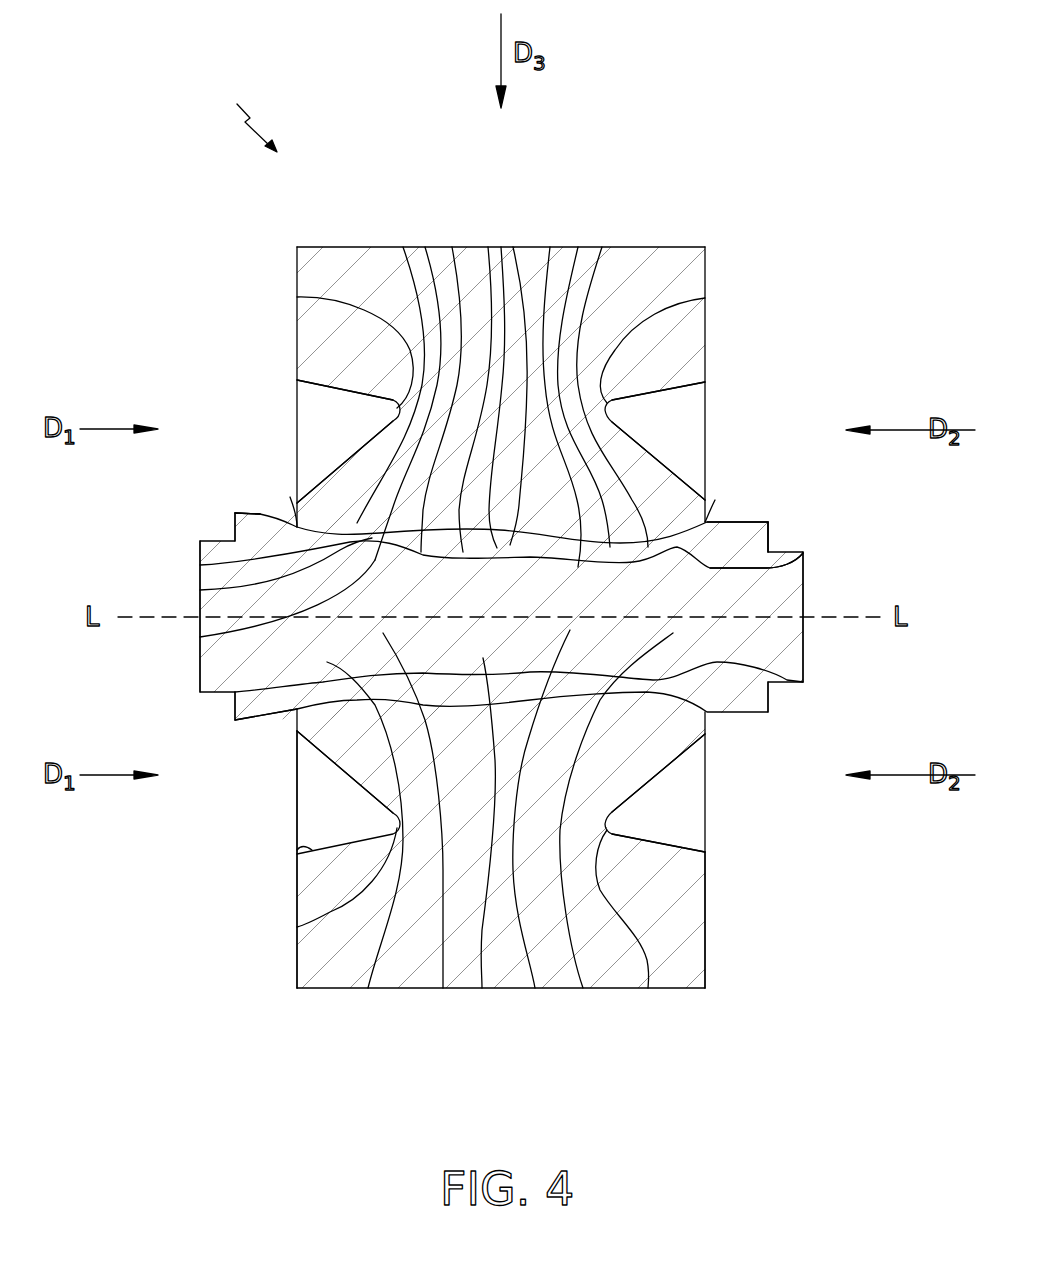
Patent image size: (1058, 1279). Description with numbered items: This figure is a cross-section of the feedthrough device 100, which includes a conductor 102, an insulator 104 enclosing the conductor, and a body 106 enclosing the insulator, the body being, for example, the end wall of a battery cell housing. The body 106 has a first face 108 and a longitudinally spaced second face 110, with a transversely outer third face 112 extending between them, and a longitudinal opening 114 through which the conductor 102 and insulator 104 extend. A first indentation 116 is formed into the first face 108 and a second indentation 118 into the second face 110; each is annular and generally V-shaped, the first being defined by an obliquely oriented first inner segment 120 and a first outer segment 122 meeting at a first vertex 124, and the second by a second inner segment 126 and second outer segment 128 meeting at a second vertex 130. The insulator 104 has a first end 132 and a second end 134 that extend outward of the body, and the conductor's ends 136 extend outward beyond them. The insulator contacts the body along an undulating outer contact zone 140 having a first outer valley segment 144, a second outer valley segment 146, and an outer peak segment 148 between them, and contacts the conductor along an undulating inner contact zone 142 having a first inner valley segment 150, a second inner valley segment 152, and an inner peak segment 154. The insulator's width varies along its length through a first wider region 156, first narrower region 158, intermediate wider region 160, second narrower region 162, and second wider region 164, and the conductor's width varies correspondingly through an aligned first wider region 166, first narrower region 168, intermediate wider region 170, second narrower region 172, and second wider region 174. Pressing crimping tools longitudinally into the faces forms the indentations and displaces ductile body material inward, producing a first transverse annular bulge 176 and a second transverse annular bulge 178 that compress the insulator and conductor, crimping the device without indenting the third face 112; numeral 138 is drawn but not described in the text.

The feedthrough device 100 is at (233, 117).
The conductor 102 is at (200, 695).
The insulator 104 is at (250, 720).
The body 106 is at (297, 990).
The first face 108 is at (297, 962).
The second face 110 is at (707, 918).
The third face 112 is at (652, 247).
The opening 114 is at (290, 497).
The first indentation 116 is at (336, 425).
The second indentation 118 is at (674, 406).
The first inner segment 120 is at (332, 470).
The first outer segment 122 is at (310, 383).
The first vertex 124 is at (297, 297).
The second inner segment 126 is at (680, 477).
The second outer segment 128 is at (705, 384).
The second vertex 130 is at (705, 298).
The first end 132 is at (235, 522).
The second end 134 is at (776, 535).
The first and second ends 136 is at (200, 668).
The second end face 138 is at (803, 655).
The outer contact zone 140 is at (200, 565).
The inner contact zone 142 is at (200, 590).
The first outer valley segment 144 is at (425, 247).
The second outer valley segment 146 is at (578, 247).
The outer peak segment 148 is at (501, 247).
The first inner valley segment 150 is at (452, 247).
The second inner valley segment 152 is at (550, 247).
The inner peak segment 154 is at (488, 247).
The first wider region 156 is at (258, 522).
The first narrower region 158 is at (403, 247).
The intermediate wider region 160 is at (513, 247).
The second narrower region 162 is at (602, 247).
The second wider region 164 is at (746, 523).
The first wider region 166 is at (368, 988).
The first narrower region 168 is at (443, 988).
The intermediate wider region 170 is at (482, 988).
The second narrower region 172 is at (535, 988).
The second wider region 174 is at (583, 988).
The first transverse annular bulge 176 is at (200, 637).
The second transverse annular bulge 178 is at (803, 555).